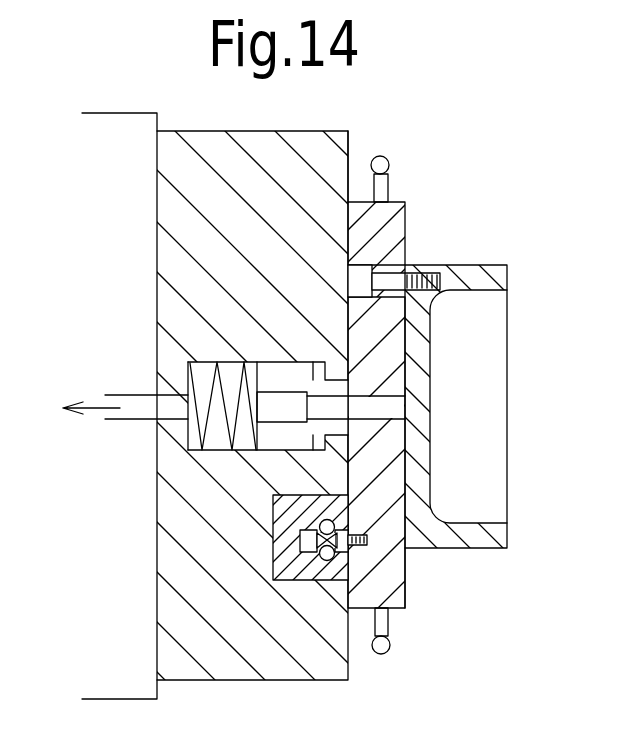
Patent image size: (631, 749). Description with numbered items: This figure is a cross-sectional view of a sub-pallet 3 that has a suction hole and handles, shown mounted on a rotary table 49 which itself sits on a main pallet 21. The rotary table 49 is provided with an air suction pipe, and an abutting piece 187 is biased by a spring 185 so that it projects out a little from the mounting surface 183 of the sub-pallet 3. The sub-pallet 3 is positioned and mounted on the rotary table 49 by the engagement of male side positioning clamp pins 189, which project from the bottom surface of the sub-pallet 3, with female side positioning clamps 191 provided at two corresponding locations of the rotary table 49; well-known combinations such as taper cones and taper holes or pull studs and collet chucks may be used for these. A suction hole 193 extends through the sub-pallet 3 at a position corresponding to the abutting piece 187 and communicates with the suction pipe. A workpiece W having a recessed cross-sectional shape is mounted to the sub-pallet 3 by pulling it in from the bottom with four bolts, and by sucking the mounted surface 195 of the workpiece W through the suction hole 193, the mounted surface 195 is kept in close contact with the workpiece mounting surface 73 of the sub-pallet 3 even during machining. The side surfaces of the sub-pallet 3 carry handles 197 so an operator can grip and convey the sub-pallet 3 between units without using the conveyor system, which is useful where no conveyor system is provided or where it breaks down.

The base 21 is at (113, 125).
The rotary table 49 is at (217, 162).
The mounting surface 183 is at (352, 168).
The handles 197 is at (390, 166).
The sub-pallet 3 is at (392, 228).
The workpiece W is at (482, 278).
The abutting piece 187 is at (292, 378).
The suction hole 193 is at (383, 398).
The spring 185 is at (223, 422).
The workpiece mounting surface 73 is at (405, 588).
The female side positioning clamps 191 is at (277, 548).
The male side positioning clamp pins 189 is at (312, 553).
The mounted surface 195 is at (405, 553).